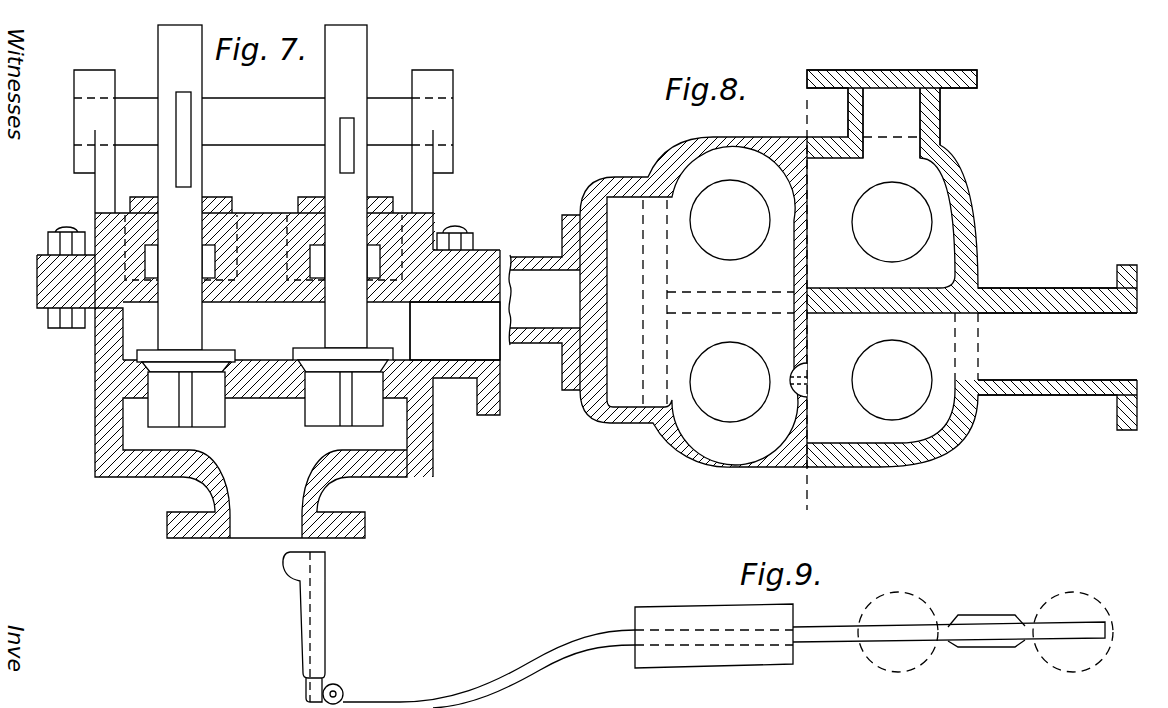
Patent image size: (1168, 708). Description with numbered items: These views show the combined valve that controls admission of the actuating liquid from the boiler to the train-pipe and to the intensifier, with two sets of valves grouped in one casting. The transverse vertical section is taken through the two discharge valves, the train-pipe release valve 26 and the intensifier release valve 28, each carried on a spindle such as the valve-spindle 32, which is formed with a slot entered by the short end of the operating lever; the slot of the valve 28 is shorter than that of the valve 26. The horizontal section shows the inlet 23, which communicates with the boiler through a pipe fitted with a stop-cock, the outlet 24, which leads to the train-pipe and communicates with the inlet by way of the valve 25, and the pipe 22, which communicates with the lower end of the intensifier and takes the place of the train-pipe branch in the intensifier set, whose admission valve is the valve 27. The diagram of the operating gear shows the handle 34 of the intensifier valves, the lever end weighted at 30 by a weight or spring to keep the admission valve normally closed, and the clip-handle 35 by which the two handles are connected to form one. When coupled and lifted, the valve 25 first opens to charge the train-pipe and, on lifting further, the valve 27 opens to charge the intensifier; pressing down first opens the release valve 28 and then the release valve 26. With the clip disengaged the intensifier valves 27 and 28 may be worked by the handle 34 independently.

In FIG. 7, the pipe 22 is at (455, 331).
In FIG. 8, the pipe 22 is at (892, 114).
In FIG. 8, the inlet 23 is at (544, 302).
In FIG. 8, the outlet 24 is at (1057, 341).
In FIG. 8, the valve 25 is at (730, 382).
In FIG. 7, the valve 26 is at (186, 399).
In FIG. 8, the valve 26 is at (892, 380).
In FIG. 8, the valve 27 is at (730, 220).
In FIG. 9, the valve 27 is at (898, 632).
In FIG. 7, the release-valve 28 is at (344, 399).
In FIG. 8, the release-valve 28 is at (892, 222).
In FIG. 9, the release-valve 28 is at (1073, 632).
In FIG. 9, the weight 30 is at (714, 636).
In FIG. 7, the valve-spindle 32 is at (186, 198).
In FIG. 9, the handle 34 is at (566, 636).
In FIG. 9, the clip-handle 35 is at (316, 627).